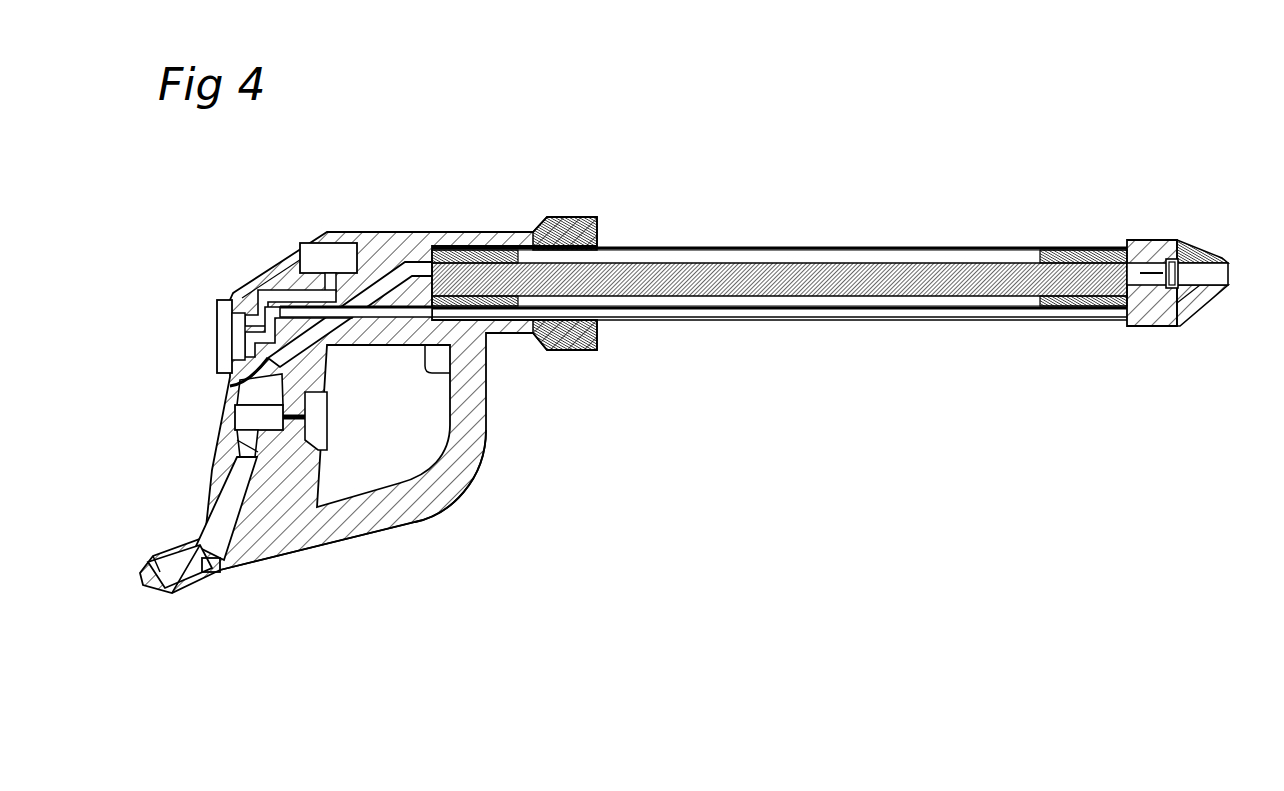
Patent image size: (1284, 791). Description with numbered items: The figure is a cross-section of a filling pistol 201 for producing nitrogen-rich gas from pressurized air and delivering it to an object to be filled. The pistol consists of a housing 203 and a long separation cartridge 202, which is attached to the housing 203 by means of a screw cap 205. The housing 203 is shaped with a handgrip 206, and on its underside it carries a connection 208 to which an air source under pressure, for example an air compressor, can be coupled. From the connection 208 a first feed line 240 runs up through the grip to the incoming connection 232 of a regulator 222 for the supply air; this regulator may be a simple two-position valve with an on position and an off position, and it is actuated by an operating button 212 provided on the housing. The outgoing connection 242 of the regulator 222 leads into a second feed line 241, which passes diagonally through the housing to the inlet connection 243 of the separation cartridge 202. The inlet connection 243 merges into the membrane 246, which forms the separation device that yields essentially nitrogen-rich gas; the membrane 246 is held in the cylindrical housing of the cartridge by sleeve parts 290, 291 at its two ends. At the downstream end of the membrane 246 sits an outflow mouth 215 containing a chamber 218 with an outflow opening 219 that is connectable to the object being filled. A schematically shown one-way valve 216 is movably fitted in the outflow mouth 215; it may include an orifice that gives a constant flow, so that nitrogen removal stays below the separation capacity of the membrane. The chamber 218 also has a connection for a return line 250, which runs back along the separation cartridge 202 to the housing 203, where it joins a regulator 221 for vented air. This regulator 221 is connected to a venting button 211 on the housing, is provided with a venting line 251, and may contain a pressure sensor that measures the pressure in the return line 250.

The filling pistol 201 is at (427, 529).
The separation cartridge 202 is at (962, 233).
The housing 203 is at (277, 493).
The screw cap 205 is at (596, 216).
The handgrip 206 is at (458, 440).
The connection 208 is at (143, 588).
The venting button 211 is at (217, 320).
The operating button 212 is at (318, 410).
The outflow mouth 215 is at (1147, 332).
The one-way valve 216 is at (1190, 305).
The chamber 218 is at (1165, 258).
The outflow opening 219 is at (1228, 263).
The regulator for vented air 221 is at (246, 322).
The regulator of the supply air 222 is at (247, 418).
The incoming connection 232 is at (216, 442).
The first feed line 240 is at (230, 565).
The second feed line 241 is at (416, 272).
The outgoing connection 242 is at (268, 392).
The inlet connection 243 is at (450, 373).
The membrane 246 is at (780, 268).
The return line 250 is at (230, 384).
The venting line 251 is at (294, 287).
The sleeve part 290 is at (496, 255).
The sleeve part 291 is at (1083, 250).